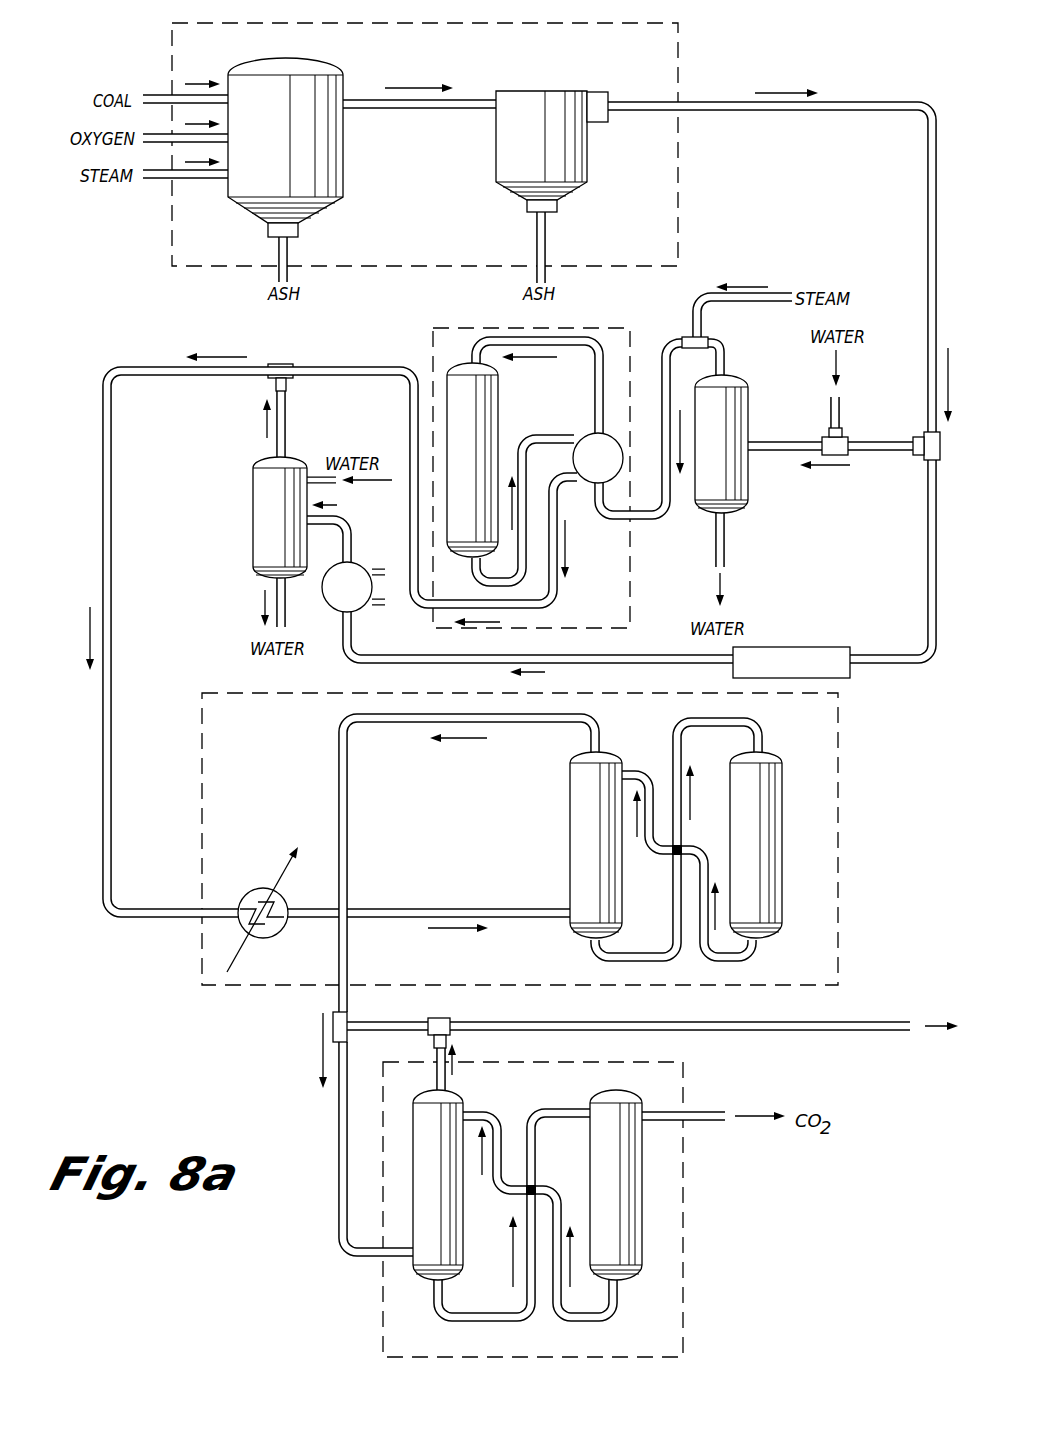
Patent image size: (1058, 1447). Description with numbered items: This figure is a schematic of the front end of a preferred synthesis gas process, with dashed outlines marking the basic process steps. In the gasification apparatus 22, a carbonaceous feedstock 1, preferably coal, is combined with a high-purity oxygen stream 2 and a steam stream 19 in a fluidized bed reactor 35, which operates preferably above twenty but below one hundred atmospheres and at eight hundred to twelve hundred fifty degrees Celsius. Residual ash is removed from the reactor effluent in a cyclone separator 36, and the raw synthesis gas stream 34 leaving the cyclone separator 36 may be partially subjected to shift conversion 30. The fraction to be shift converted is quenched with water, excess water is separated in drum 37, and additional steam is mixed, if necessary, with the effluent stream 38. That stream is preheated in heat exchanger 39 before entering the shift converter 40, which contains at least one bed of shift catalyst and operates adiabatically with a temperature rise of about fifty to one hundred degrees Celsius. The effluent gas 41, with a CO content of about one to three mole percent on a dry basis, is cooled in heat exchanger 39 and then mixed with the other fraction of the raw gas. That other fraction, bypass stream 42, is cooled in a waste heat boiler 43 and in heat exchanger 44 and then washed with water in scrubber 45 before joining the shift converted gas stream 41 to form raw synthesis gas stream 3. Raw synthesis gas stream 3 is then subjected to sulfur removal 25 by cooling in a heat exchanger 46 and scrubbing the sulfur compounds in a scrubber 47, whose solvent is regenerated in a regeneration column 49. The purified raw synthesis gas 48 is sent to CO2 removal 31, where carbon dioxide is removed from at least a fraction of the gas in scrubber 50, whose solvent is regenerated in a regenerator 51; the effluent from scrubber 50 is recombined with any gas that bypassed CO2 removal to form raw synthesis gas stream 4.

The carbonaceous feedstock 1 is at (149, 93).
The high-purity oxygen stream 2 is at (153, 135).
The steam stream 19 is at (163, 176).
The gasification apparatus 22 is at (690, 56).
The fluidized bed reactor 35 is at (340, 73).
The cyclone separator 36 is at (565, 93).
The raw synthesis gas stream 34 is at (927, 196).
The shift conversion 30 is at (598, 323).
The drum 37 is at (750, 418).
The effluent stream 38 is at (723, 361).
The heat exchanger 39 is at (606, 436).
The shift converter 40 is at (498, 406).
The effluent gas 41 is at (543, 437).
The bypass stream 42 is at (925, 556).
The waste heat boiler 43 is at (785, 646).
The heat exchanger 44 is at (351, 566).
The scrubber 45 is at (253, 521).
The raw synthesis gas stream 3 is at (113, 496).
The sulfur removal 25 is at (845, 775).
The heat exchanger 46 is at (256, 884).
The scrubber 47 is at (572, 830).
The purified raw synthesis gas 48 is at (535, 728).
The regeneration column 49 is at (784, 807).
The raw synthesis gas stream 4 is at (845, 1025).
The scrubber 50 is at (413, 1169).
The regenerator 51 is at (645, 1171).
The CO2 removal 31 is at (688, 1222).